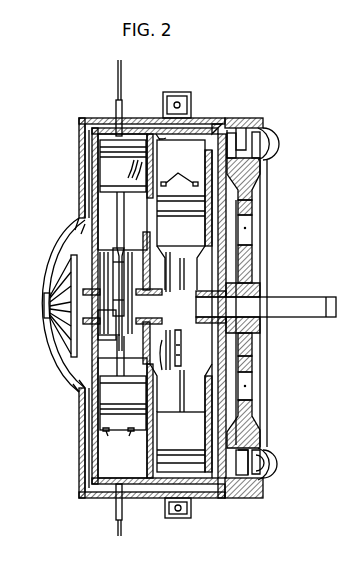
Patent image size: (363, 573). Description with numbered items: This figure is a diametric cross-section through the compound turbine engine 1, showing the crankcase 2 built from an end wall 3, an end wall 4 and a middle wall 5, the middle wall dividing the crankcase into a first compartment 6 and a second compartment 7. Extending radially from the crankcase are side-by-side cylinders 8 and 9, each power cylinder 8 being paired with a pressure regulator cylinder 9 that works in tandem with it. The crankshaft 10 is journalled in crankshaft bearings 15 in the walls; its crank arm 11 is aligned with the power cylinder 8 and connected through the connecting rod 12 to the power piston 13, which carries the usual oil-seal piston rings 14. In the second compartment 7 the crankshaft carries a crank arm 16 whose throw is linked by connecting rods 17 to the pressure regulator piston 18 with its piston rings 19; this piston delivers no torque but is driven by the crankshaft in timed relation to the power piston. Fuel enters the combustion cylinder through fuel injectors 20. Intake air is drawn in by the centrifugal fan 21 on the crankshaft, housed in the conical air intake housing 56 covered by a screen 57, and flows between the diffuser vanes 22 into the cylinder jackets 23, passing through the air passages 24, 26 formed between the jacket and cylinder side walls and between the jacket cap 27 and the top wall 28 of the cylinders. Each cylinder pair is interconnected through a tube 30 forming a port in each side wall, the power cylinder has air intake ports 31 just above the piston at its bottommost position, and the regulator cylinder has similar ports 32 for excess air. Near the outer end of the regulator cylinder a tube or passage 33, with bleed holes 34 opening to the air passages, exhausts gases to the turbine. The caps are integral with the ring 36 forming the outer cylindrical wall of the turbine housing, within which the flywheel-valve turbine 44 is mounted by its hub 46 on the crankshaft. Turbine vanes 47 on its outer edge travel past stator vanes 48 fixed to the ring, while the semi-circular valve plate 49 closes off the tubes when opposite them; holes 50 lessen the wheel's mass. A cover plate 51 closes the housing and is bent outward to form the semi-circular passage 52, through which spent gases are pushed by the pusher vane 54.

The compound turbine engine 1 is at (76, 429).
The crankcase 2 is at (214, 262).
The end wall 3 is at (217, 274).
The end wall 4 is at (92, 341).
The middle wall 5 is at (151, 274).
The first compartment 6 is at (105, 327).
The second compartment 7 is at (214, 353).
The power cylinder 8 is at (91, 204).
The pressure regulator cylinder 9 is at (215, 175).
The crankshaft 10 is at (283, 314).
The crank arm 11 is at (128, 271).
The connecting rod 12 is at (110, 218).
The power piston 13 is at (101, 176).
The piston rings 14 is at (123, 285).
The crankshaft bearings 15 is at (207, 300).
The crank arm 16 is at (170, 359).
The connecting rods 17 is at (183, 265).
The pressure regulator piston 18 is at (190, 243).
The piston rings 19 is at (176, 204).
The fuel injector 20 is at (115, 108).
The centrifugal fan 21 is at (56, 346).
The diffuser vanes 22 is at (78, 250).
The cylinder jacket 23 is at (80, 153).
The air passage 24 is at (92, 161).
The air passage 26 is at (150, 117).
The jacket cap 27 is at (216, 121).
The top wall of cylinder 28 is at (186, 132).
The tube 30 is at (153, 456).
The air intake ports 31 is at (130, 434).
The ports 32 is at (179, 172).
The tube or passage 33 is at (226, 127).
The bleed holes 34 is at (228, 492).
The ring 36 is at (259, 494).
The flywheel-valve turbine 44 is at (253, 252).
The hub 46 is at (261, 292).
The turbine vanes 47 is at (257, 149).
The stator vanes 48 is at (263, 128).
The valve plate 49 is at (253, 151).
The holes 50 is at (248, 233).
The cover plate 51 is at (269, 410).
The semi-circular passage 52 is at (278, 145).
The pusher vane 54 is at (264, 457).
The conical air intake housing 56 is at (72, 370).
The screen 57 is at (42, 286).